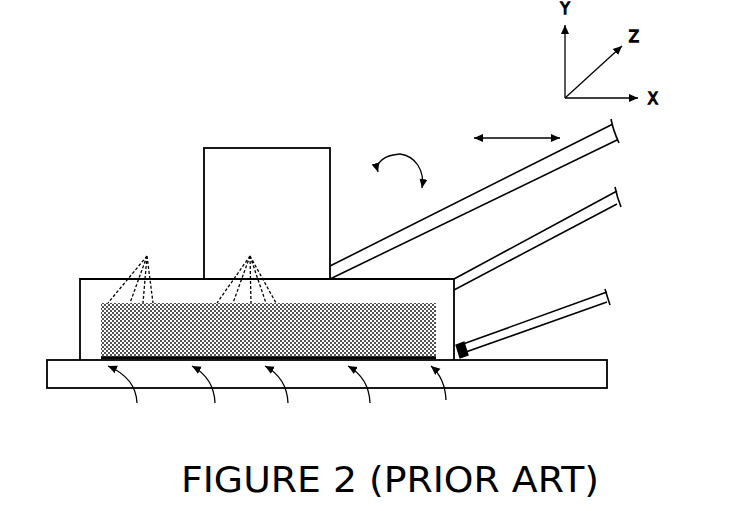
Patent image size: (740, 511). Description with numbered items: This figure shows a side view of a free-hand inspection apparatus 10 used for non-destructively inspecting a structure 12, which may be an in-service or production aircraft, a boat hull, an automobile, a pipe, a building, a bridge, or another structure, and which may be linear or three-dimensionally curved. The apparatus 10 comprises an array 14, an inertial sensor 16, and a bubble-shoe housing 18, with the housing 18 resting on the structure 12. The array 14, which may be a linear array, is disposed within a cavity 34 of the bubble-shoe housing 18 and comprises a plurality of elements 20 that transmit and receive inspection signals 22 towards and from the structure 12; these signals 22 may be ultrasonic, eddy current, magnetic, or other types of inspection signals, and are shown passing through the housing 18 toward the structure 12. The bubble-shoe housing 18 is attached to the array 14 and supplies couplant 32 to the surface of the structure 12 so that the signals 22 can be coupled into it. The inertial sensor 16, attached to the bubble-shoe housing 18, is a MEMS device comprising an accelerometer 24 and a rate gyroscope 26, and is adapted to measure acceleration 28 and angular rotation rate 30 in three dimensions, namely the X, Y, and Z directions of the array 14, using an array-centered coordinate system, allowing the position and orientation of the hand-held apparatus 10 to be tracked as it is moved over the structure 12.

The free-hand inspection apparatus 10 is at (368, 106).
The structure 12 is at (560, 375).
The array 14 is at (100, 315).
The inertial sensor 16 is at (267, 185).
The bubble-shoe housing 18 is at (80, 316).
The elements 20 is at (147, 256).
The inspection signals 22 is at (283, 397).
The accelerometer 24 is at (267, 185).
The rate gyroscope 26 is at (240, 148).
The acceleration 28 is at (505, 138).
The angular rotation rate 30 is at (406, 156).
The couplant 32 is at (170, 357).
The cavity 34 is at (127, 282).